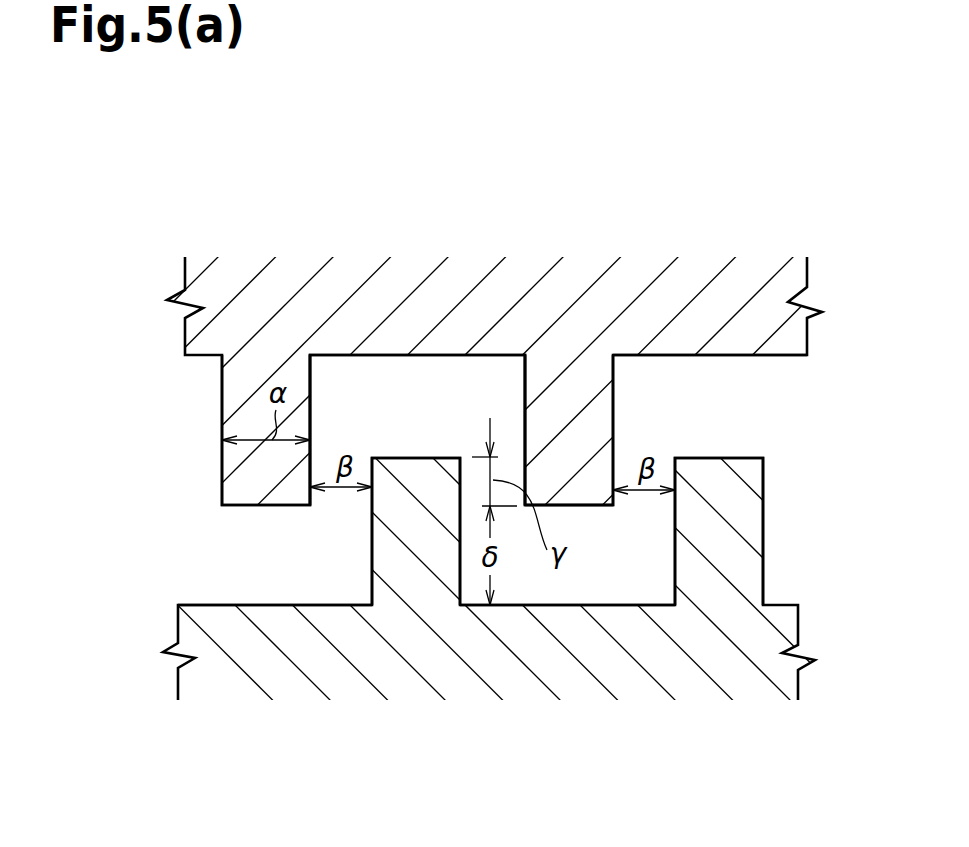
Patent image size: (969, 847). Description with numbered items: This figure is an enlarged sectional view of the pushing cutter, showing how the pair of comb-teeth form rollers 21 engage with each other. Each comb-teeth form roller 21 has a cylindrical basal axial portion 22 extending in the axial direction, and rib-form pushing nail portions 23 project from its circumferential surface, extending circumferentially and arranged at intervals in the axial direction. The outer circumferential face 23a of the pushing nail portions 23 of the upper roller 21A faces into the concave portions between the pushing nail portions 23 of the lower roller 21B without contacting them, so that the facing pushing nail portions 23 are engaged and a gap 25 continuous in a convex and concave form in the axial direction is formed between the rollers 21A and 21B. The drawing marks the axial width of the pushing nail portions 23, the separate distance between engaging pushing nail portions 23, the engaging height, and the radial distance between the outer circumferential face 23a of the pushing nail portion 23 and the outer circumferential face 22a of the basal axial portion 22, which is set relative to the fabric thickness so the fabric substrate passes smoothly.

The comb-teeth form roller 21 is at (484, 483).
The comb-teeth form roller 21A is at (573, 251).
The comb-teeth form roller 21B is at (528, 755).
The basal axial portion 22 is at (725, 358).
The pushing nail portion 23 is at (240, 386).
The gap 25 is at (436, 422).
The outer circumferential face of the pushing nail portion 23a is at (580, 512).
The outer circumferential face of the basal axial portion 22a is at (613, 606).